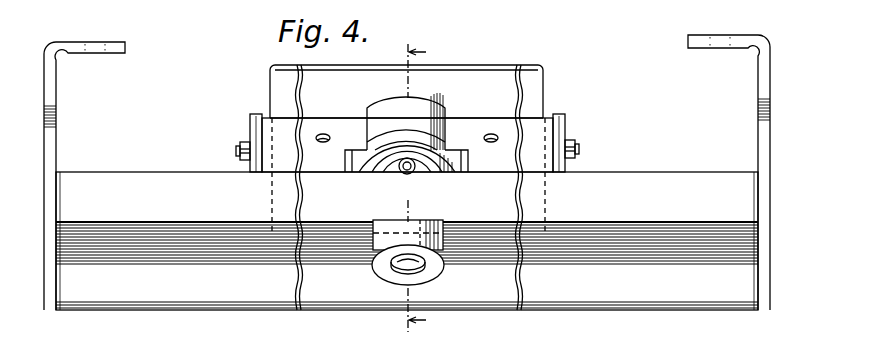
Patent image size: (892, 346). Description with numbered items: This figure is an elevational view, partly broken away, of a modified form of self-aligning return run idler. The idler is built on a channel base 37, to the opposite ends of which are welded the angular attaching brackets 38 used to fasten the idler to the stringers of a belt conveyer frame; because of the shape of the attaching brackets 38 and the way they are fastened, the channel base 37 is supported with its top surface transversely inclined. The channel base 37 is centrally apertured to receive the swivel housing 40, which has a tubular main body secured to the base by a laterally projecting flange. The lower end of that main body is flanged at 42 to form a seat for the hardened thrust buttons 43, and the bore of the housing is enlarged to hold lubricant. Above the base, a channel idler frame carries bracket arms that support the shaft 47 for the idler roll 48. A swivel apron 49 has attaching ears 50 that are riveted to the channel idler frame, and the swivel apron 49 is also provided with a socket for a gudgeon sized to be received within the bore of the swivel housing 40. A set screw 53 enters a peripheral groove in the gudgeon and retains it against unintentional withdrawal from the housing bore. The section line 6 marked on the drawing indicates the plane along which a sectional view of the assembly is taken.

The section line 6- 6 is at (408, 182).
The channel base 37 is at (650, 173).
The angular attaching brackets 38 is at (57, 134).
The swivel housing 40 is at (437, 240).
The flange 42 is at (380, 282).
The hardened thrust buttons 43 is at (425, 286).
The shaft 47 is at (581, 148).
The idler roll 48 is at (498, 66).
The swivel apron 49 is at (406, 121).
The attaching ears 50 is at (498, 166).
The set screw 53 is at (408, 168).